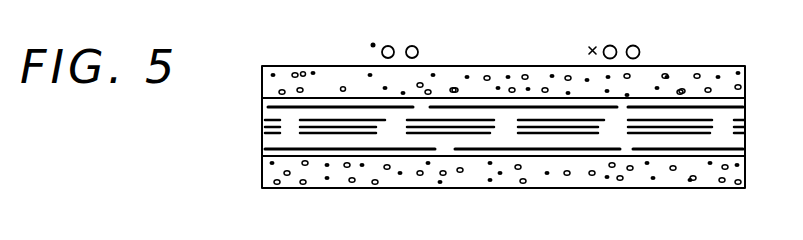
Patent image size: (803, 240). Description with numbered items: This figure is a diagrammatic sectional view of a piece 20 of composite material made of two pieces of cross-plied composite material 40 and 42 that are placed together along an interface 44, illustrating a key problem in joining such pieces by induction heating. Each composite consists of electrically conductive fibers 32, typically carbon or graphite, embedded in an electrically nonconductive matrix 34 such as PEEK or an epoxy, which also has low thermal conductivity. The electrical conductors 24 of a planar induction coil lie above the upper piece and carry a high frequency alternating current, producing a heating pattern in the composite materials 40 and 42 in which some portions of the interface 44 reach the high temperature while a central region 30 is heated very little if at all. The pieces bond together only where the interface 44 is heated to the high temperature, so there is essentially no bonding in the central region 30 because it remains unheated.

The piece of material 20 is at (272, 65).
The electrical conductors 24 is at (410, 46).
The central region 30 is at (549, 130).
The electrically conductive fibers 32 is at (343, 87).
The electrically nonconductive matrix 34 is at (303, 72).
The piece of cross-plied composite material 40 is at (258, 67).
The piece of cross-plied composite material 42 is at (252, 132).
The interface 44 is at (745, 127).